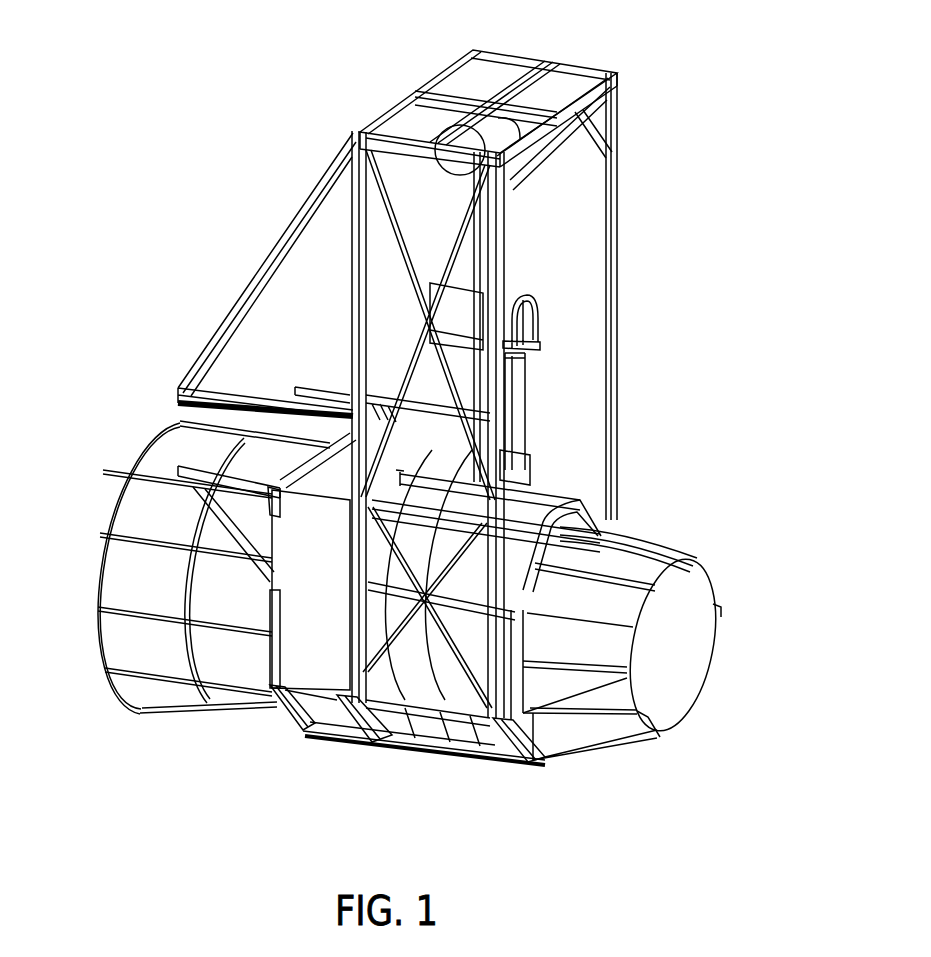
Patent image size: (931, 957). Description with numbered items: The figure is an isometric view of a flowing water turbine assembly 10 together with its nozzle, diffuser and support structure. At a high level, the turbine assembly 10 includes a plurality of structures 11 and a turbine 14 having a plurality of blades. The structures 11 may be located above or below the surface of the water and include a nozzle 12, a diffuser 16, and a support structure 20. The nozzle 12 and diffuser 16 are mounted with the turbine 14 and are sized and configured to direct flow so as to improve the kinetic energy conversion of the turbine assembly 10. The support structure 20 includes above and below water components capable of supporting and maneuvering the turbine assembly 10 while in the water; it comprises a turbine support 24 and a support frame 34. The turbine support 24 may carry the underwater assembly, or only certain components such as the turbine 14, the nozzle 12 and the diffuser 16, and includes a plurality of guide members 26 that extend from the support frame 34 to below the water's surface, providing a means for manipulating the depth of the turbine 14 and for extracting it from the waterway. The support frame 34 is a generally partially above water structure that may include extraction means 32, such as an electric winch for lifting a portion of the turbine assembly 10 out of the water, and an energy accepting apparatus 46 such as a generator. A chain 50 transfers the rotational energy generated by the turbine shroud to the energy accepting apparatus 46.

The turbine assembly 10 is at (728, 178).
The structures 11 is at (643, 169).
The nozzle 12 is at (673, 657).
The turbine 14 is at (450, 588).
The diffuser 16 is at (128, 653).
The support structure 20 is at (148, 396).
The turbine support 24 is at (369, 752).
The guide members 26 is at (493, 702).
The extraction means 32 is at (473, 140).
The support frame 34 is at (316, 177).
The energy accepting apparatus 46 is at (533, 313).
The chain 50 is at (522, 405).